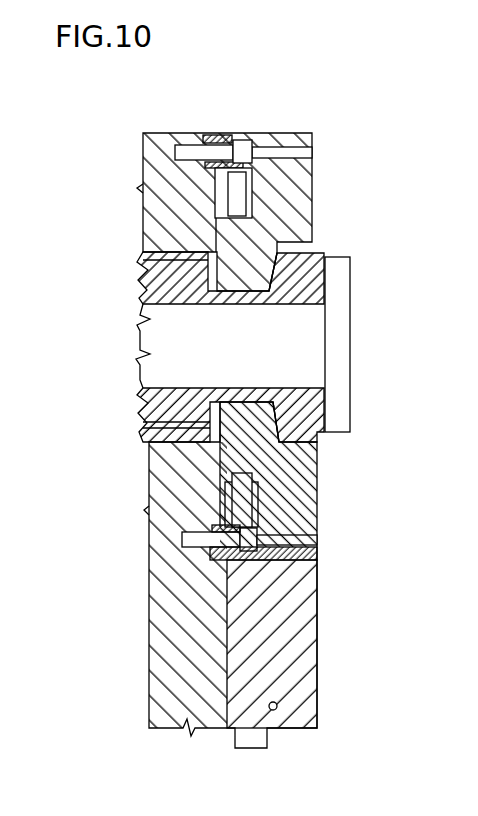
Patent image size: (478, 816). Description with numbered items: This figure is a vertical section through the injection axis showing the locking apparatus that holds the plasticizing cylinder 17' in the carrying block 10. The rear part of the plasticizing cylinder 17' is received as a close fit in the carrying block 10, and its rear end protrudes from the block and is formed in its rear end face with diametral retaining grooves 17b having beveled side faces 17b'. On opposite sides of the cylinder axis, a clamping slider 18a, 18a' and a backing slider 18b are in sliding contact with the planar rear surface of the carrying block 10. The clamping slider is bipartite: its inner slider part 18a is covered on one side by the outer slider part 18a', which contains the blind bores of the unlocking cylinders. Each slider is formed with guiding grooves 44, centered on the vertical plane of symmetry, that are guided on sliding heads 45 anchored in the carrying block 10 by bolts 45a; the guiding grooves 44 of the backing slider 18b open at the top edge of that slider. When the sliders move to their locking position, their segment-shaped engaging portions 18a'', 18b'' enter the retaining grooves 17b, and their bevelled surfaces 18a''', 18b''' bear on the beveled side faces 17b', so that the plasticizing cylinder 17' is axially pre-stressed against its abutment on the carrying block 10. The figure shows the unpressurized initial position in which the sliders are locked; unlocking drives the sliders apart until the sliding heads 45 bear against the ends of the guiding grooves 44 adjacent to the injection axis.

The carrying block 10 is at (143, 187).
The retaining grooves 17b is at (190, 339).
The plasticizing cylinder 17' is at (111, 332).
The beveled side faces 17b' is at (341, 360).
The inner slider part 18a is at (310, 533).
The outer slider part 18a' is at (319, 644).
The engaging portion 18a'' is at (323, 449).
The bevelled surface 18a''' is at (355, 398).
The backing slider 18b is at (331, 171).
The engaging portion 18b'' is at (321, 281).
The bevelled surface 18b''' is at (367, 344).
The guiding grooves 44 is at (233, 188).
The sliding heads 45 is at (224, 137).
The bolts 45a is at (190, 151).